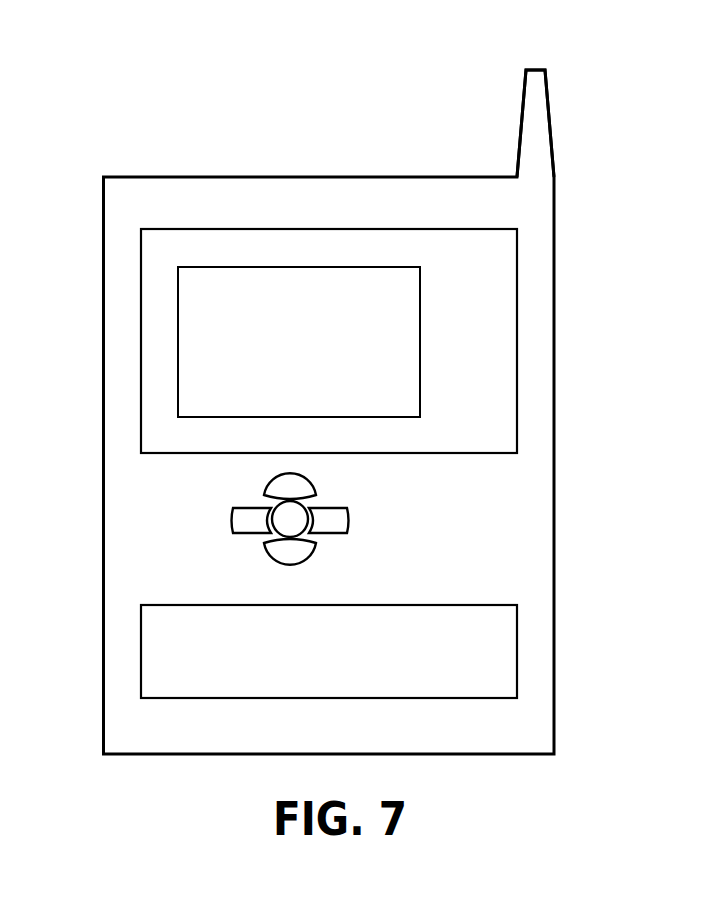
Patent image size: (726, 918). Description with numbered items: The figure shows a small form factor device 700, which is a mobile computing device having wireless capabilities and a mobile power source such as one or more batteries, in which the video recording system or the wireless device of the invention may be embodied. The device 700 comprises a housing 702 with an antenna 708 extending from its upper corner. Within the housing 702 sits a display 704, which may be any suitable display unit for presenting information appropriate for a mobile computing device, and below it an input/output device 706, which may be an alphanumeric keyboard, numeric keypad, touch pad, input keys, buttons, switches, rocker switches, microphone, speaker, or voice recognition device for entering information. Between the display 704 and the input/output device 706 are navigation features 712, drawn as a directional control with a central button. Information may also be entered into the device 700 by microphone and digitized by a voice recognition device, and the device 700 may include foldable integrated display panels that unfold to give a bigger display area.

The small form factor device 700 is at (119, 80).
The housing 702 is at (554, 483).
The display 704 is at (517, 257).
The input/output (I/O) device 706 is at (517, 680).
The antenna 708 is at (521, 118).
The navigation features 712 is at (376, 510).